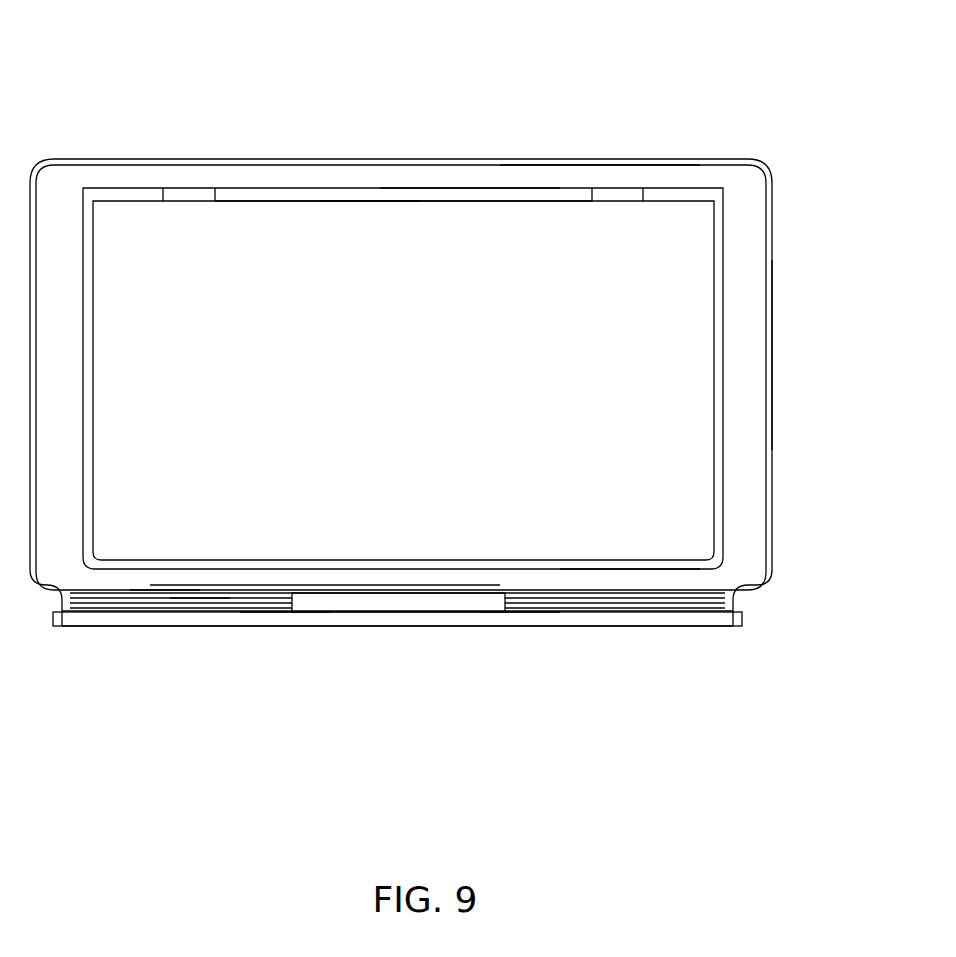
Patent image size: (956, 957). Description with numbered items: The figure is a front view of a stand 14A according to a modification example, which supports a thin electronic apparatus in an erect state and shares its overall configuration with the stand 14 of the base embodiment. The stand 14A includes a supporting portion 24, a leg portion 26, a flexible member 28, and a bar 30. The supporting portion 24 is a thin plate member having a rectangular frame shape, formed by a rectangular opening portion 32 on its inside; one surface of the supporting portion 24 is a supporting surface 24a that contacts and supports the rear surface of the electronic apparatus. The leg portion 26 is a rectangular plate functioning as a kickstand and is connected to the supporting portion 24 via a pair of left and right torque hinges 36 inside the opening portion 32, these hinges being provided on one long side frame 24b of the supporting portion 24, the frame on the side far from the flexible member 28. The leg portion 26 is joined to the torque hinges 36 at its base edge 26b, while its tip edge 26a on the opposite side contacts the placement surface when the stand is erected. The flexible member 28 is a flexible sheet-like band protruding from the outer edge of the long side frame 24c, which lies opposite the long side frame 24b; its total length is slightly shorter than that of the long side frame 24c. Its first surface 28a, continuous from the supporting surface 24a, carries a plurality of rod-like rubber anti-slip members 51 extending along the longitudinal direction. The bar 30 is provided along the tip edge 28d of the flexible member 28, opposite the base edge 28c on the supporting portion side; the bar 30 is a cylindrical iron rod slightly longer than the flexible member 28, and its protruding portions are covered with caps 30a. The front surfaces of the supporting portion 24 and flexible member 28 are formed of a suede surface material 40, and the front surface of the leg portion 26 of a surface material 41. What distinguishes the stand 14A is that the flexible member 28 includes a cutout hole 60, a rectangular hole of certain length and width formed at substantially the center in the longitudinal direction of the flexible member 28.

The stand 14A is at (92, 60).
The stand 14 is at (787, 590).
The supporting portion 24 is at (520, 160).
The supporting surface 24a is at (752, 353).
The long side frame 24b is at (583, 176).
The long side frame 24c is at (320, 577).
The leg portion 26 is at (378, 235).
The tip edge 26a is at (585, 565).
The base edge 26b is at (482, 202).
The flexible member 28 is at (214, 586).
The first surface 28a is at (285, 613).
The base edge 28c is at (515, 586).
The tip edge 28d is at (545, 618).
The bar 30 is at (122, 625).
The caps 30a is at (58, 628).
The opening portion 32 is at (317, 190).
The torque hinge 36 is at (185, 195).
The surface material 40 is at (183, 590).
The surface material 41 is at (356, 240).
The anti-slip member 51 is at (177, 600).
The cutout hole 60 is at (410, 612).